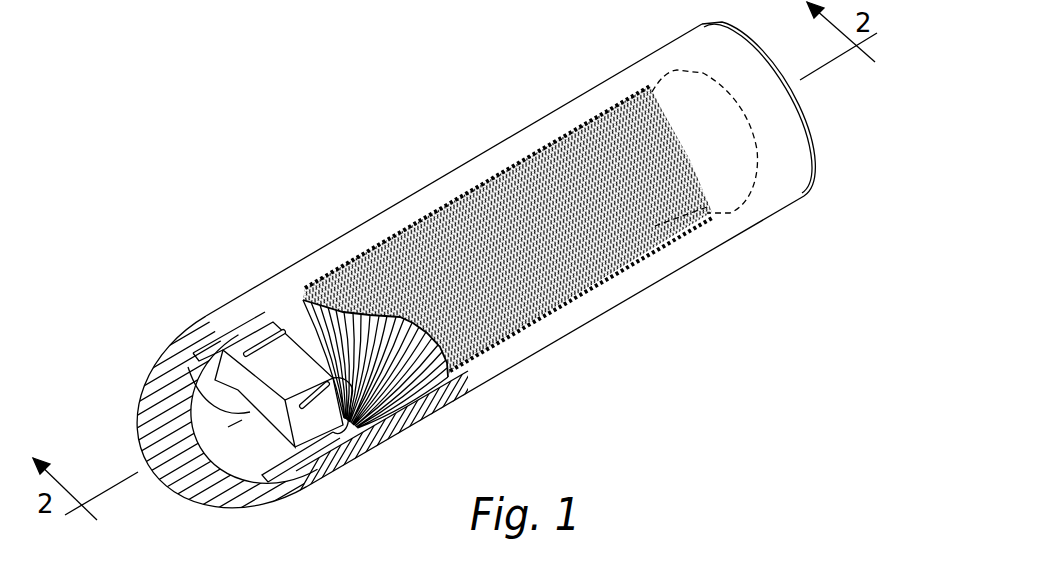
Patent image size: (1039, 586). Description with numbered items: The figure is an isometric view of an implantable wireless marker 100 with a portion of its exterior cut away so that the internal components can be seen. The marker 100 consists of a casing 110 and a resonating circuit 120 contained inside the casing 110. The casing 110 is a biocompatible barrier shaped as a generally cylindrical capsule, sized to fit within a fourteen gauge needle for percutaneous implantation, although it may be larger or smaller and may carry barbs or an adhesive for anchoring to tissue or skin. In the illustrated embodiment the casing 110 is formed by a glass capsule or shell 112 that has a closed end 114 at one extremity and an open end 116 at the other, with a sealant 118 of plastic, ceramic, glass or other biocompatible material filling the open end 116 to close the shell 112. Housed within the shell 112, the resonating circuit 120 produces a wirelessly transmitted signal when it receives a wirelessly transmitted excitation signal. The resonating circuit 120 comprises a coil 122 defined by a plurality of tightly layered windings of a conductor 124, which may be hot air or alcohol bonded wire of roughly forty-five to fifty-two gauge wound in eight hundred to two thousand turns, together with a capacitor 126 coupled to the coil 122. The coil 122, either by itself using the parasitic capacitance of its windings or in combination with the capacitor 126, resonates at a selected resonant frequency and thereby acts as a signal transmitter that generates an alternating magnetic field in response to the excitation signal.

The implantable marker 100 is at (480, 296).
The casing 110 is at (520, 130).
The shell 112 is at (425, 405).
The closed end 114 is at (192, 474).
The open end 116 is at (703, 75).
The sealant 118 is at (815, 117).
The resonating circuit 120 is at (253, 438).
The coil 122 is at (303, 326).
The conductor 124 is at (312, 405).
The capacitor 126 is at (188, 406).